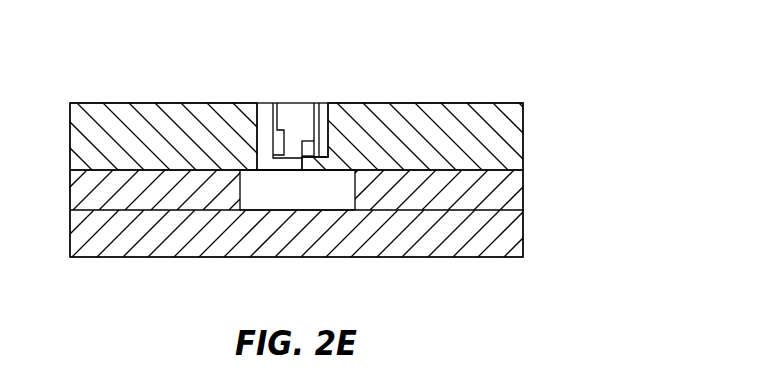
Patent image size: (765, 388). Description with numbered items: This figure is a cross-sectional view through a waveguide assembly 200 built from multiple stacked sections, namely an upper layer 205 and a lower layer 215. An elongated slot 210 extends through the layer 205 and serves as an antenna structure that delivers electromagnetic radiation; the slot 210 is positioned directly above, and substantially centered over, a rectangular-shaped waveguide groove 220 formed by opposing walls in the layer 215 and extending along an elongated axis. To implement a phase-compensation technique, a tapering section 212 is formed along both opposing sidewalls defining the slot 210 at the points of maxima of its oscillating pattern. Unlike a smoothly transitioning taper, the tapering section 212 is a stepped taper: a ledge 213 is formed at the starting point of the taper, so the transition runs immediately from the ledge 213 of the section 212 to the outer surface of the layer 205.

The waveguide assembly 200 is at (540, 96).
The layer 205 is at (467, 114).
The elongated slot 210 is at (282, 92).
The tapering section 212 is at (312, 115).
The ledge 213 is at (306, 154).
The layer 215 is at (537, 172).
The waveguide groove 220 is at (317, 200).